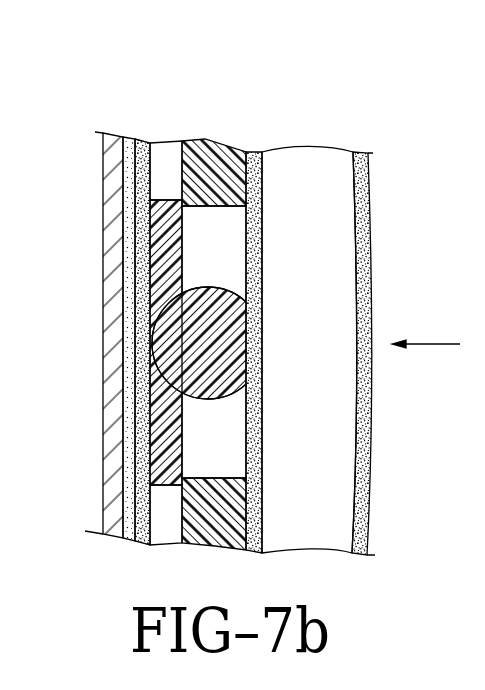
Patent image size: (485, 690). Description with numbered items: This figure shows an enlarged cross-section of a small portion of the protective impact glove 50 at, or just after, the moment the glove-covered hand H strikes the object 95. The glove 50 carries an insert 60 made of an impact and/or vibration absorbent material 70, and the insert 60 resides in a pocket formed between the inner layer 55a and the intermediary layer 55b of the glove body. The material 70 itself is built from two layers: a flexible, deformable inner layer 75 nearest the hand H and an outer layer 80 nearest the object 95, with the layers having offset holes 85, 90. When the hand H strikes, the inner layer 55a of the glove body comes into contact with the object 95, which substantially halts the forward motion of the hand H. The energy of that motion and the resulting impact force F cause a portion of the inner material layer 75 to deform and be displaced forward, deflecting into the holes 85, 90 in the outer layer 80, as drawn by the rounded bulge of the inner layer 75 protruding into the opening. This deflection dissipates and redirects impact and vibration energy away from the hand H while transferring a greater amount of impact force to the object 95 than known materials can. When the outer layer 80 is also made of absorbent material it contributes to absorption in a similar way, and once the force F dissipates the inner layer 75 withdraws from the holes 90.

The object 95 is at (113, 193).
The intermediary layer 55b is at (130, 421).
The glove 50 is at (141, 455).
The insert 60 is at (91, 188).
The outer layer 80 is at (150, 263).
The holes 90 is at (165, 505).
The impact and/or vibration absorbent material 70 is at (219, 127).
The inner layer 75 is at (250, 205).
The holes 85 is at (225, 460).
The inner layer 55a is at (263, 152).
The hand H is at (332, 203).
The impact force F is at (426, 326).